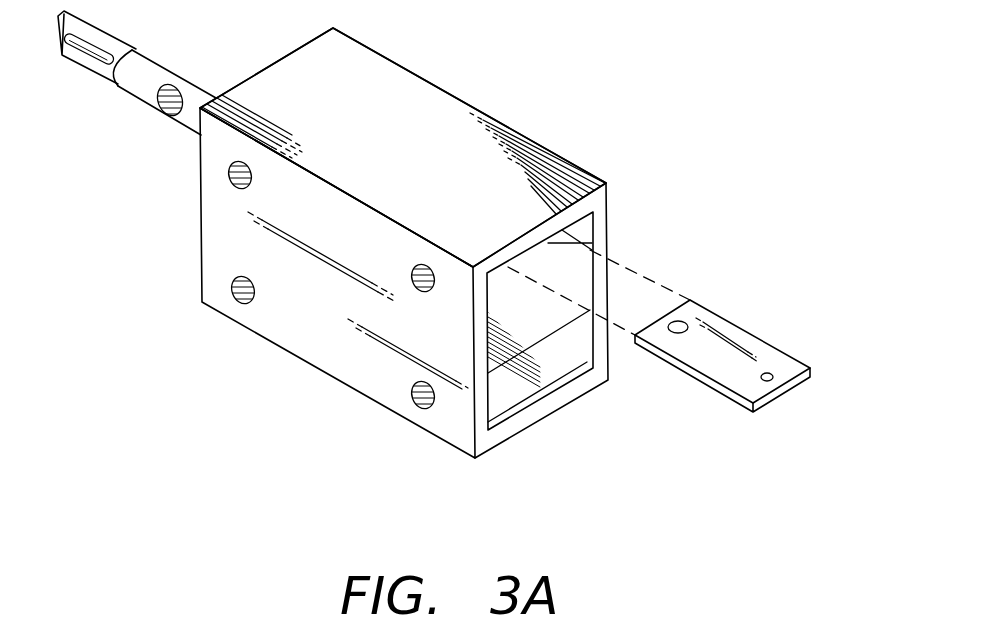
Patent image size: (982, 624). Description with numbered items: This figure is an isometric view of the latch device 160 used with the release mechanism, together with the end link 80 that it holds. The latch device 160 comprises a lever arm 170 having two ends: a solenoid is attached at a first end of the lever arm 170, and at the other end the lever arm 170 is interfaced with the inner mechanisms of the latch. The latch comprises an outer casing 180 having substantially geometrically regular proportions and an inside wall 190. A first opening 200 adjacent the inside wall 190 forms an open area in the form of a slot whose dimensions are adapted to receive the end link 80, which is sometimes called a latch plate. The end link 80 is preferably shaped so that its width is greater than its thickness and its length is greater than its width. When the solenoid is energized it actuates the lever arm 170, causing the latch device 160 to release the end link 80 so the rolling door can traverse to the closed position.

The latch device 160 is at (517, 73).
The lever arm 170 is at (152, 55).
The outer casing 180 is at (380, 53).
The inside wall 190 is at (503, 267).
The first opening 200 is at (590, 242).
The end link 80 is at (782, 397).